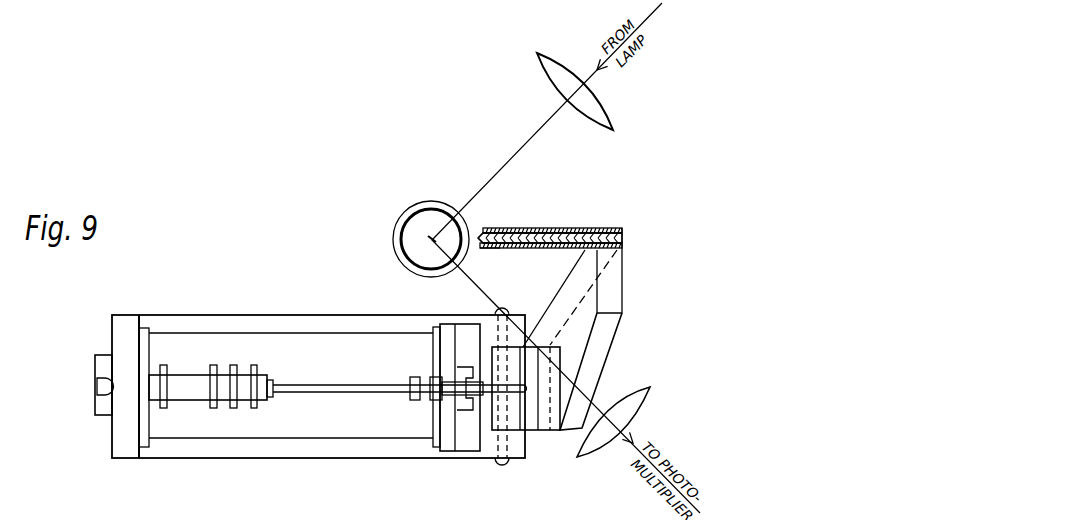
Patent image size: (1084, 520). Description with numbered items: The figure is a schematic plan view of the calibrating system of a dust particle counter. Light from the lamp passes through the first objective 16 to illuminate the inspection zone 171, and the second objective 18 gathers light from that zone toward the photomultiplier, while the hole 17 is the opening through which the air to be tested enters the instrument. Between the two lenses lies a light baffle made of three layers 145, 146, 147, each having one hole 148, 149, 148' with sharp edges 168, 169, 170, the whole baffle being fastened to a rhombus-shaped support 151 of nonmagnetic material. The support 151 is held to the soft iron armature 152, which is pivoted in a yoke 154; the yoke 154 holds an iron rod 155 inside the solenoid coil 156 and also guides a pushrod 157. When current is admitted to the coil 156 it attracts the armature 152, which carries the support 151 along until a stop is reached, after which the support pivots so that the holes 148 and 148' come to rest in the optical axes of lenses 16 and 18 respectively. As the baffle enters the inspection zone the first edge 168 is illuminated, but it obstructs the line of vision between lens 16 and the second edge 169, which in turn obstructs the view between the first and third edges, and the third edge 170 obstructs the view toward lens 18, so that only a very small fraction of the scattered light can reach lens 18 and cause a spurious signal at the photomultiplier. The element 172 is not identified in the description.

The first objective 16 is at (541, 55).
The hole 17 is at (395, 224).
The inspection zone 171 is at (432, 238).
The second objective 18 is at (651, 390).
The light baffle layer 145 is at (603, 226).
The light baffle layer 146 is at (623, 238).
The light baffle layer 147 is at (623, 247).
The hole 148 is at (550, 210).
The hole 148' is at (552, 258).
The hole 149 is at (520, 229).
The sharp edge 168 is at (483, 228).
The sharp edge 169 is at (481, 250).
The sharp edge 170 is at (488, 250).
The rhombus-shaped support 151 is at (622, 326).
The soft iron plate (armature) 152 is at (530, 432).
The yoke 154 is at (112, 440).
The iron rod 155 is at (93, 408).
The solenoid coil 156 is at (297, 440).
The pushrod 157 is at (358, 398).
The base 172 is at (478, 516).